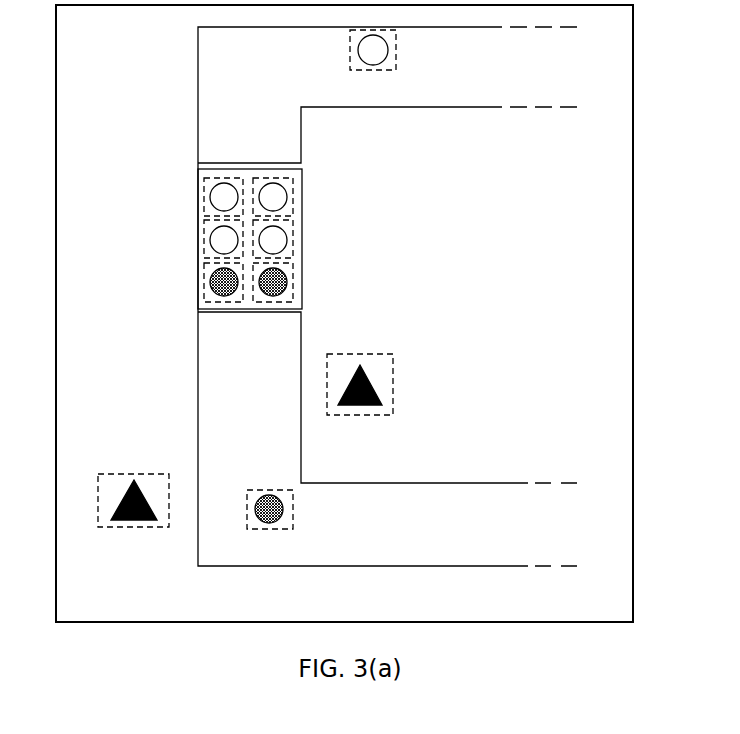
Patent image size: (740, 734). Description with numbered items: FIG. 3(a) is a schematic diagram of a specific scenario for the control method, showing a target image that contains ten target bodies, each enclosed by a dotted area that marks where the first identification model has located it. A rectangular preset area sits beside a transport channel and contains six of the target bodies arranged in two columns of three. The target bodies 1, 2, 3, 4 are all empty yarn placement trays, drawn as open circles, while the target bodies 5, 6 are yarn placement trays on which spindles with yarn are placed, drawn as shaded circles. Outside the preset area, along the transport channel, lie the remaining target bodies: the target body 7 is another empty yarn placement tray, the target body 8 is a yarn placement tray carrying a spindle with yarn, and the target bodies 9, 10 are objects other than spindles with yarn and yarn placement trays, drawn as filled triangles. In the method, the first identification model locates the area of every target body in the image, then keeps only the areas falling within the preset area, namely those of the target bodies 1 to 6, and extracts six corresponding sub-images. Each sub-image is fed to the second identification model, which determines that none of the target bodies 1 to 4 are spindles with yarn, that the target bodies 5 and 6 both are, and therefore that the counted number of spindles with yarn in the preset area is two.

The target body 1 is at (224, 197).
The target body 2 is at (273, 197).
The target body 3 is at (224, 240).
The target body 4 is at (273, 240).
The target body 5 is at (224, 282).
The target body 6 is at (273, 282).
The target body 7 is at (373, 50).
The target body 8 is at (269, 509).
The target body 9 is at (134, 520).
The target body 10 is at (360, 392).